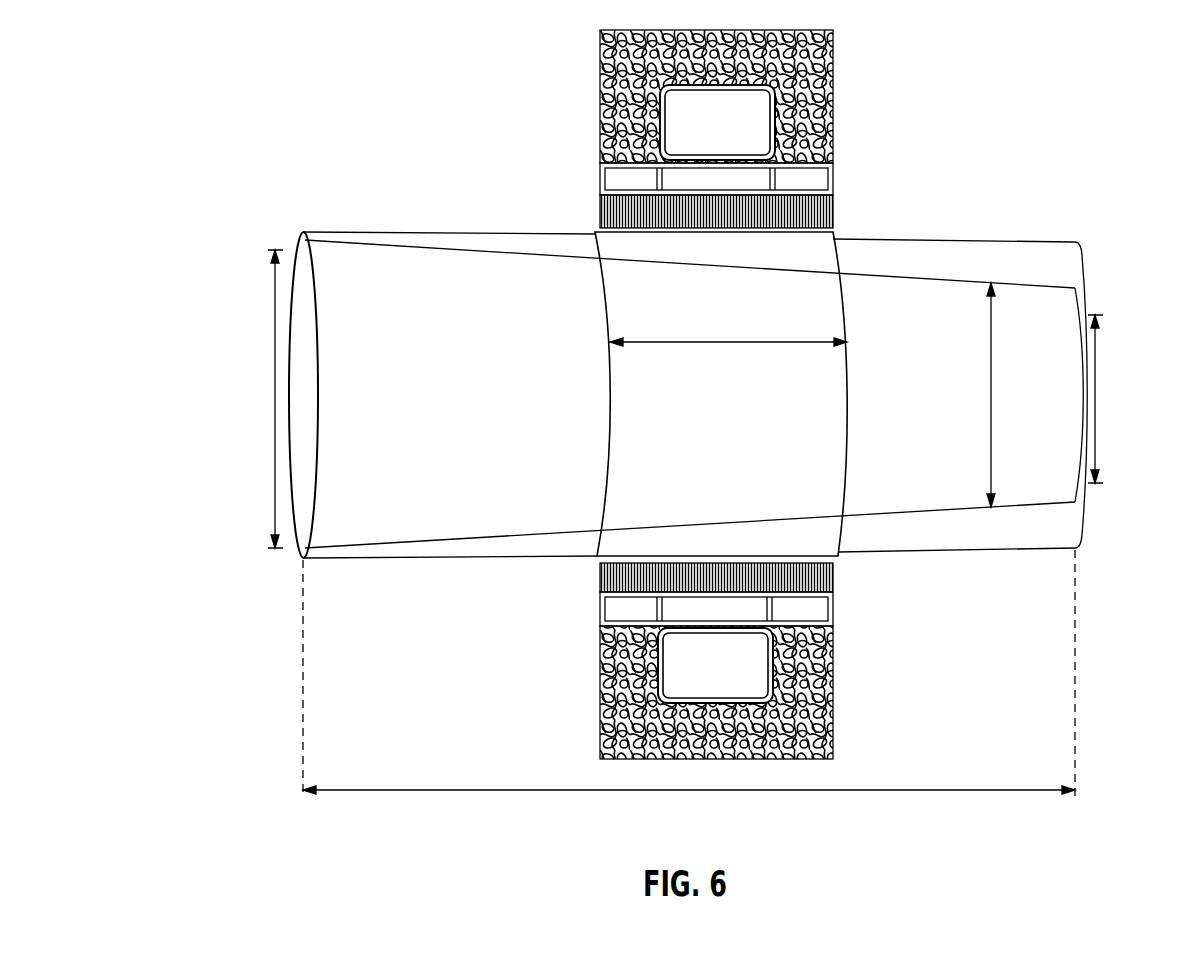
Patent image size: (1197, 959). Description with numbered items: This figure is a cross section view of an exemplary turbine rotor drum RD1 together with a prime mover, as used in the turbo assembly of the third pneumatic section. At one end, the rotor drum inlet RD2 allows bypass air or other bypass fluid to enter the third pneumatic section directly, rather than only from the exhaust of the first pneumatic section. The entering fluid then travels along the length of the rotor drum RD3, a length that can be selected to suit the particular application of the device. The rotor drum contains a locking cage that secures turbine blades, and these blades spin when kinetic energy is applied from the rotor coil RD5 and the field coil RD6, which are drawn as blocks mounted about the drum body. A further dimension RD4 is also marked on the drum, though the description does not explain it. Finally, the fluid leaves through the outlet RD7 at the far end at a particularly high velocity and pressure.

The turbine rotor drum RD1 is at (299, 230).
The rotor drum inlet RD2 is at (275, 362).
The length of the rotor drum RD3 is at (451, 789).
The inner diameter of tube at second end RD4 is at (991, 420).
The rotor coil RD5 is at (723, 345).
The field coil RD6 is at (840, 127).
The outlet RD7 is at (1097, 383).